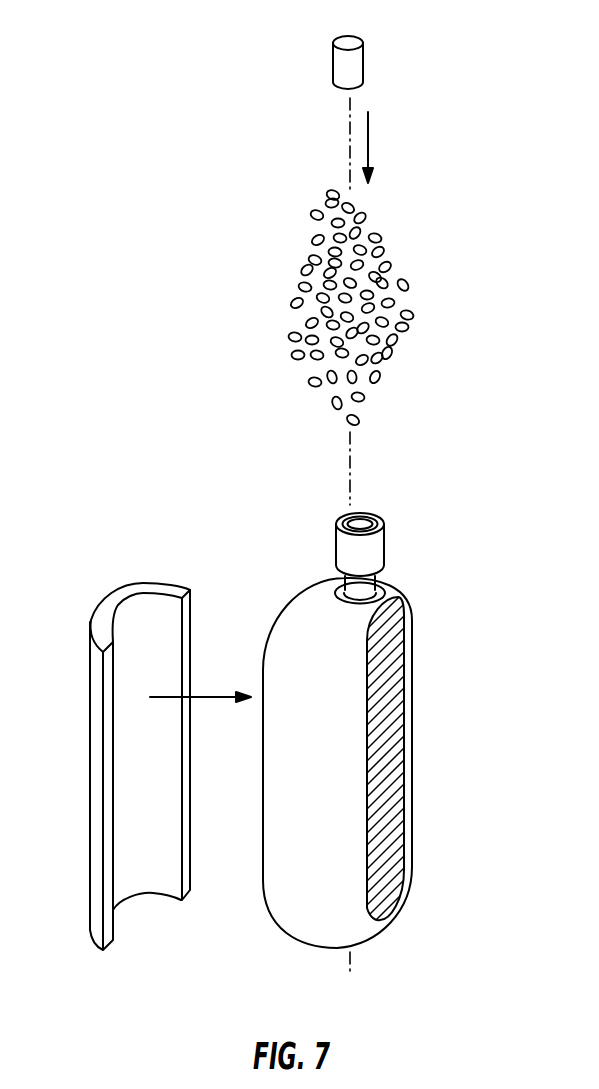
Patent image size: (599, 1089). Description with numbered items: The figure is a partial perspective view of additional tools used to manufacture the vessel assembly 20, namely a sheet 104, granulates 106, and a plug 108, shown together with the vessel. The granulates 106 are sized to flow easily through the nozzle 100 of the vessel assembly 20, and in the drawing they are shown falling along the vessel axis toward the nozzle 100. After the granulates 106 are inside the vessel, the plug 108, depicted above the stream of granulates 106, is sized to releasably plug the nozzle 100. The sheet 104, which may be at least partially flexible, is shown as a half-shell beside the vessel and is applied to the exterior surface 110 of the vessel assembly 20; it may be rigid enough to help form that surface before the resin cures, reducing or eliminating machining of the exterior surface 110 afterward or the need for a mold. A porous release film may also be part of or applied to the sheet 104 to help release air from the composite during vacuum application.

The vessel assembly 20 is at (314, 744).
The nozzle 100 is at (386, 547).
The sheet 104 is at (89, 720).
The granulates 106 is at (403, 250).
The plug 108 is at (371, 59).
The exterior surface 110 is at (273, 913).